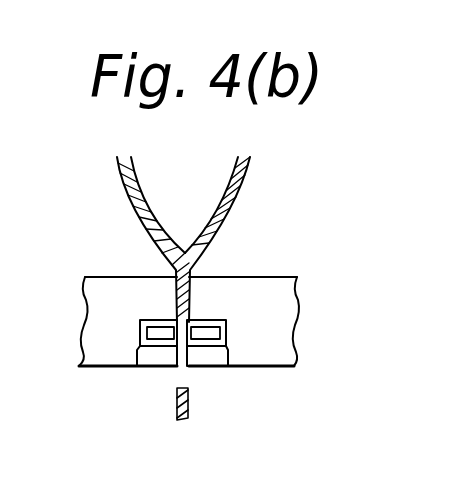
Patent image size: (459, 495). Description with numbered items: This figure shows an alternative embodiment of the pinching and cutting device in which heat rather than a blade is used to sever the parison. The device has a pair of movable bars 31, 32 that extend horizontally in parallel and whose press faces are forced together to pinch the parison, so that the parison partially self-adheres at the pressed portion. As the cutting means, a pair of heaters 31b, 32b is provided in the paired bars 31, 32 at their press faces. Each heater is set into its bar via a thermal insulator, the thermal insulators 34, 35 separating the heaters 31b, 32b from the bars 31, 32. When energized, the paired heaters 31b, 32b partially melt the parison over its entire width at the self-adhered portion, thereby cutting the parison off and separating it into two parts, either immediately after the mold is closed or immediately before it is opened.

The movable bar 31 is at (290, 328).
The movable bar 32 is at (88, 322).
The heater 31b is at (207, 329).
The heater 32b is at (160, 329).
The thermal insulator 34 is at (225, 346).
The thermal insulator 35 is at (142, 346).